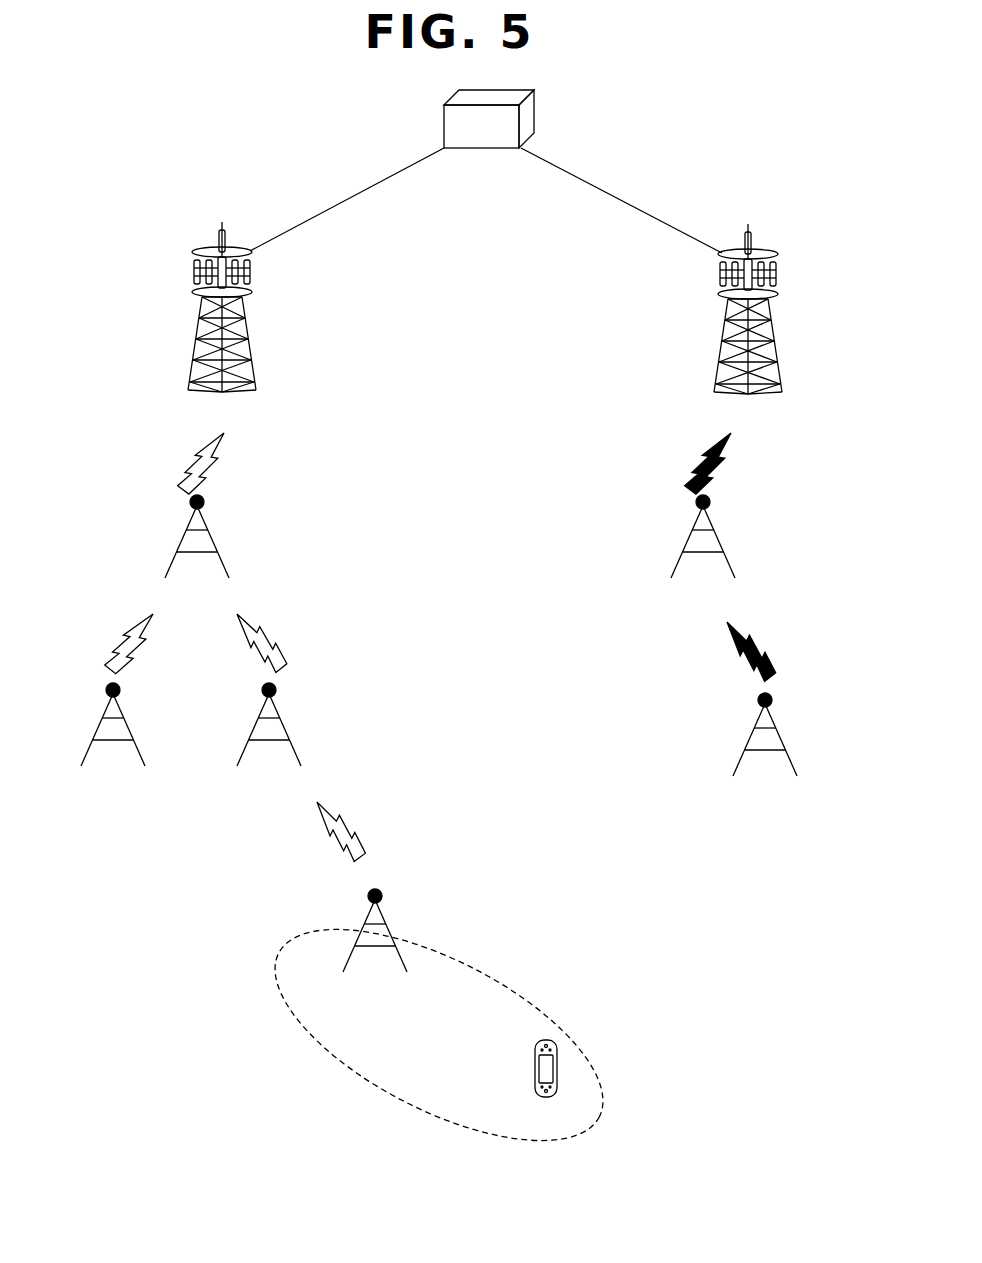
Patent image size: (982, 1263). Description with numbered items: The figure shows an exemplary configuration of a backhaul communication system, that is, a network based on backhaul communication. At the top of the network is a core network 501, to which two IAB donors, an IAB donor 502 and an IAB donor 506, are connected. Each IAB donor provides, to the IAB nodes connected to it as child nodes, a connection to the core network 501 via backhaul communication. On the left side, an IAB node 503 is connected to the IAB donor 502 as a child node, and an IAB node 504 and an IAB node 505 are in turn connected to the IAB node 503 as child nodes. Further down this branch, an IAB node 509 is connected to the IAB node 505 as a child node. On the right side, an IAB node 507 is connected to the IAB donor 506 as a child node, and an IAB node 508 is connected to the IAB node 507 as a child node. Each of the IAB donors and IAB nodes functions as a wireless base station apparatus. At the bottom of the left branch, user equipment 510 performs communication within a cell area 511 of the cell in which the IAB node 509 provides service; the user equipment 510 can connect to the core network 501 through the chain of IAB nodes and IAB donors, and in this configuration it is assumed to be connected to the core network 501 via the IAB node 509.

The core network 501 is at (535, 110).
The IAB donor 502 is at (199, 316).
The IAB node 503 is at (204, 501).
The IAB node 504 is at (120, 689).
The IAB node 505 is at (276, 689).
The IAB donor 506 is at (775, 314).
The IAB node 507 is at (710, 501).
The IAB node 508 is at (772, 699).
The IAB node 509 is at (382, 895).
The user equipment 510 is at (535, 1066).
The cell area 511 is at (585, 964).